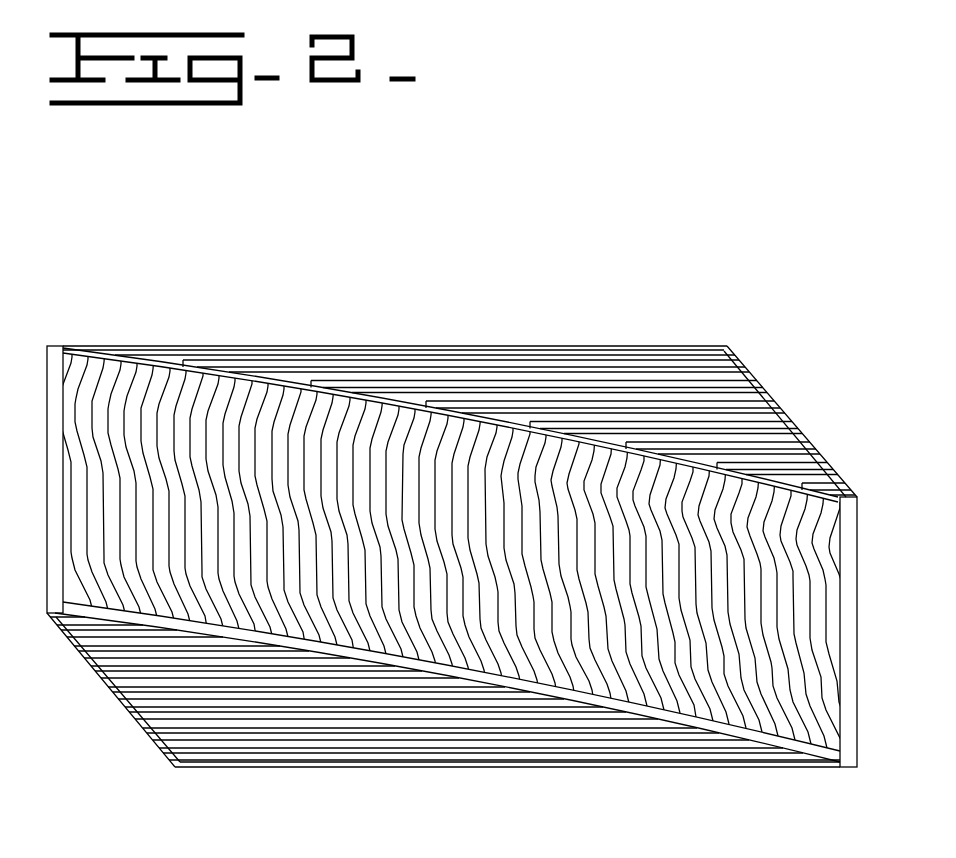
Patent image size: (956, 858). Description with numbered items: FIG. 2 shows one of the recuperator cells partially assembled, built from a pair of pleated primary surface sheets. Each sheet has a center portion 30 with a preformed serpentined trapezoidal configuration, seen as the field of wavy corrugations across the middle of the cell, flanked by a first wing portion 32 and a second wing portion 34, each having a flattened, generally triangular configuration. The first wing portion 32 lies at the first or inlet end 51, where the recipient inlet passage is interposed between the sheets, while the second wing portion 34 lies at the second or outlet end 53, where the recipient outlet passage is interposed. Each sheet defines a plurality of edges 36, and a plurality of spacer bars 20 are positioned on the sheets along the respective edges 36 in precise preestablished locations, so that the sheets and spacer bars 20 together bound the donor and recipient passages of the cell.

The spacer bars 20 is at (54, 350).
The center portion 30 is at (822, 552).
The first wing portion 32 is at (735, 362).
The second wing portion 34 is at (148, 723).
The edges 36 is at (137, 346).
The inlet end 51 is at (760, 392).
The outlet end 53 is at (118, 697).